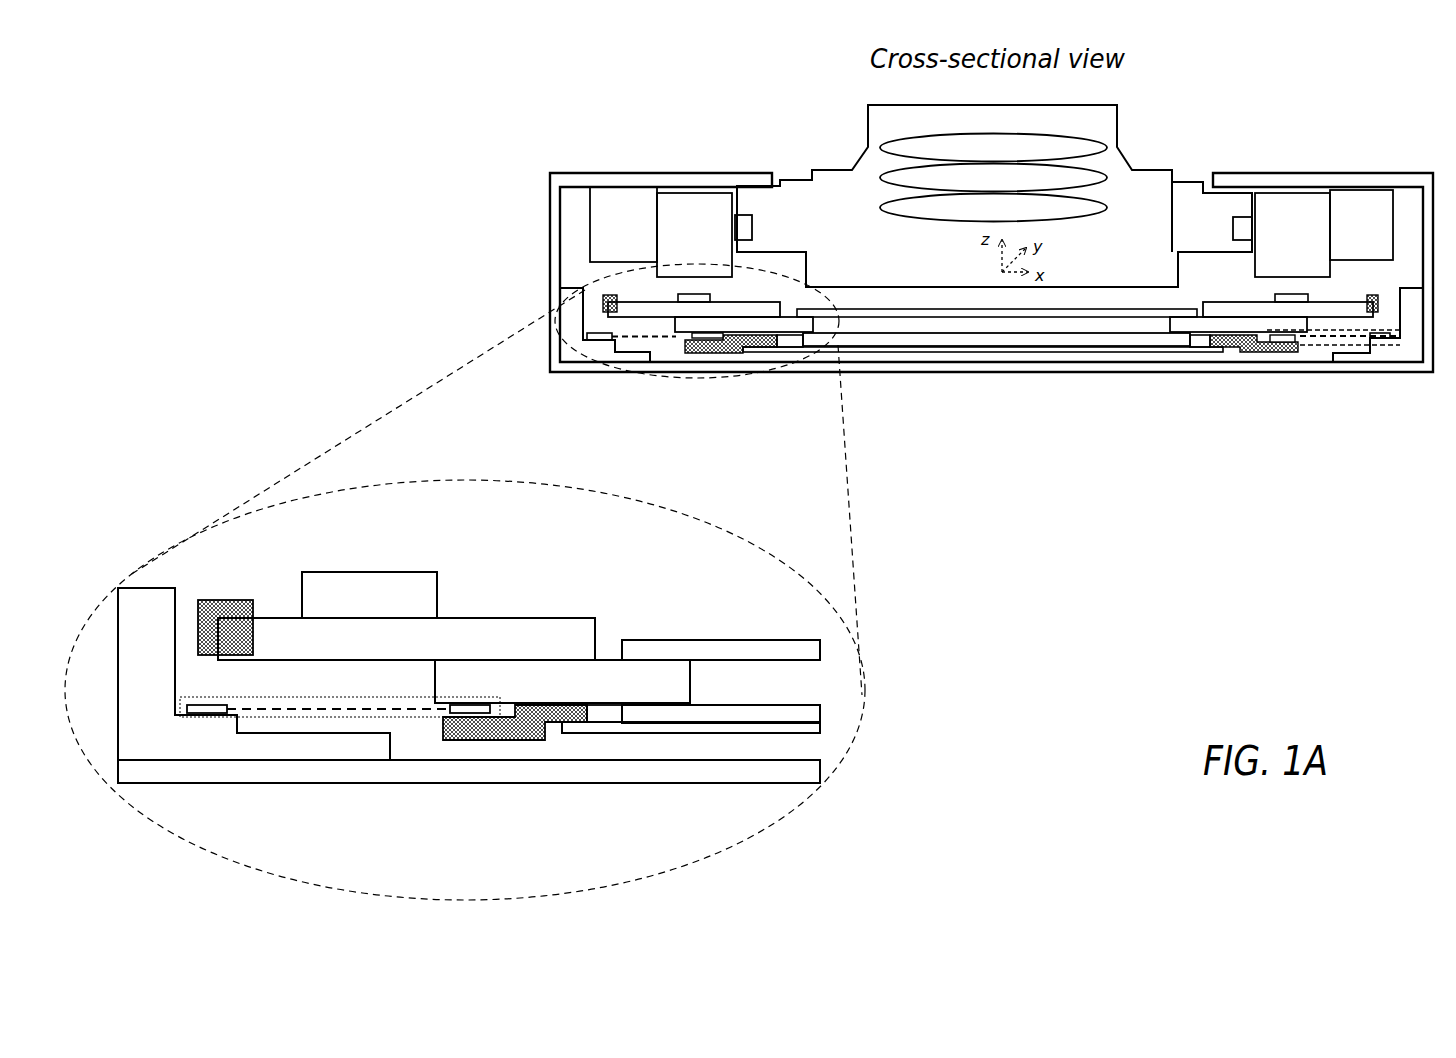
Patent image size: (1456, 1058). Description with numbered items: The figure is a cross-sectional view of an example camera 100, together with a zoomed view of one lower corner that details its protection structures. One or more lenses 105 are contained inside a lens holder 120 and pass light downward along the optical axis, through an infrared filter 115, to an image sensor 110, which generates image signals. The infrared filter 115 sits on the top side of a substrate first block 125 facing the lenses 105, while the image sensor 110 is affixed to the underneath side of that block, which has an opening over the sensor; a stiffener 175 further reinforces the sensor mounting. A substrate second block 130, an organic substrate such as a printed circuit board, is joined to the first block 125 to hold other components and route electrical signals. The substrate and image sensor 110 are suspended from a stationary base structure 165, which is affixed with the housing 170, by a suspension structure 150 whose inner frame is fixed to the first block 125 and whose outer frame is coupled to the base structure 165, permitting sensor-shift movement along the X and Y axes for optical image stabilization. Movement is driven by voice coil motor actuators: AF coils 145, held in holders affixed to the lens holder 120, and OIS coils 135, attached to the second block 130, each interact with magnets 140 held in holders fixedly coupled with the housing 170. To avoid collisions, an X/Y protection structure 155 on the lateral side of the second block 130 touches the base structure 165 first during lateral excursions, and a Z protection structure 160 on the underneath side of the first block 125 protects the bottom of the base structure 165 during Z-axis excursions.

The camera 100 is at (432, 103).
The lenses 105 is at (1106, 135).
The image sensor 110 is at (1027, 345).
The infrared filter 115 is at (935, 314).
The lens holder 120 is at (866, 251).
The substrate first block 125 is at (1190, 330).
The substrate second block 130 is at (1227, 308).
The OIS coils 135 is at (417, 605).
The magnets 140 is at (1308, 240).
The AF coils 145 is at (1233, 225).
The suspension structure 150 is at (1320, 345).
The X/Y protection structure 155 is at (1372, 340).
The Z protection structure 160 is at (1260, 353).
The base structure 165 is at (1413, 350).
The housing 170 is at (1418, 182).
The stiffener 175 is at (1125, 353).